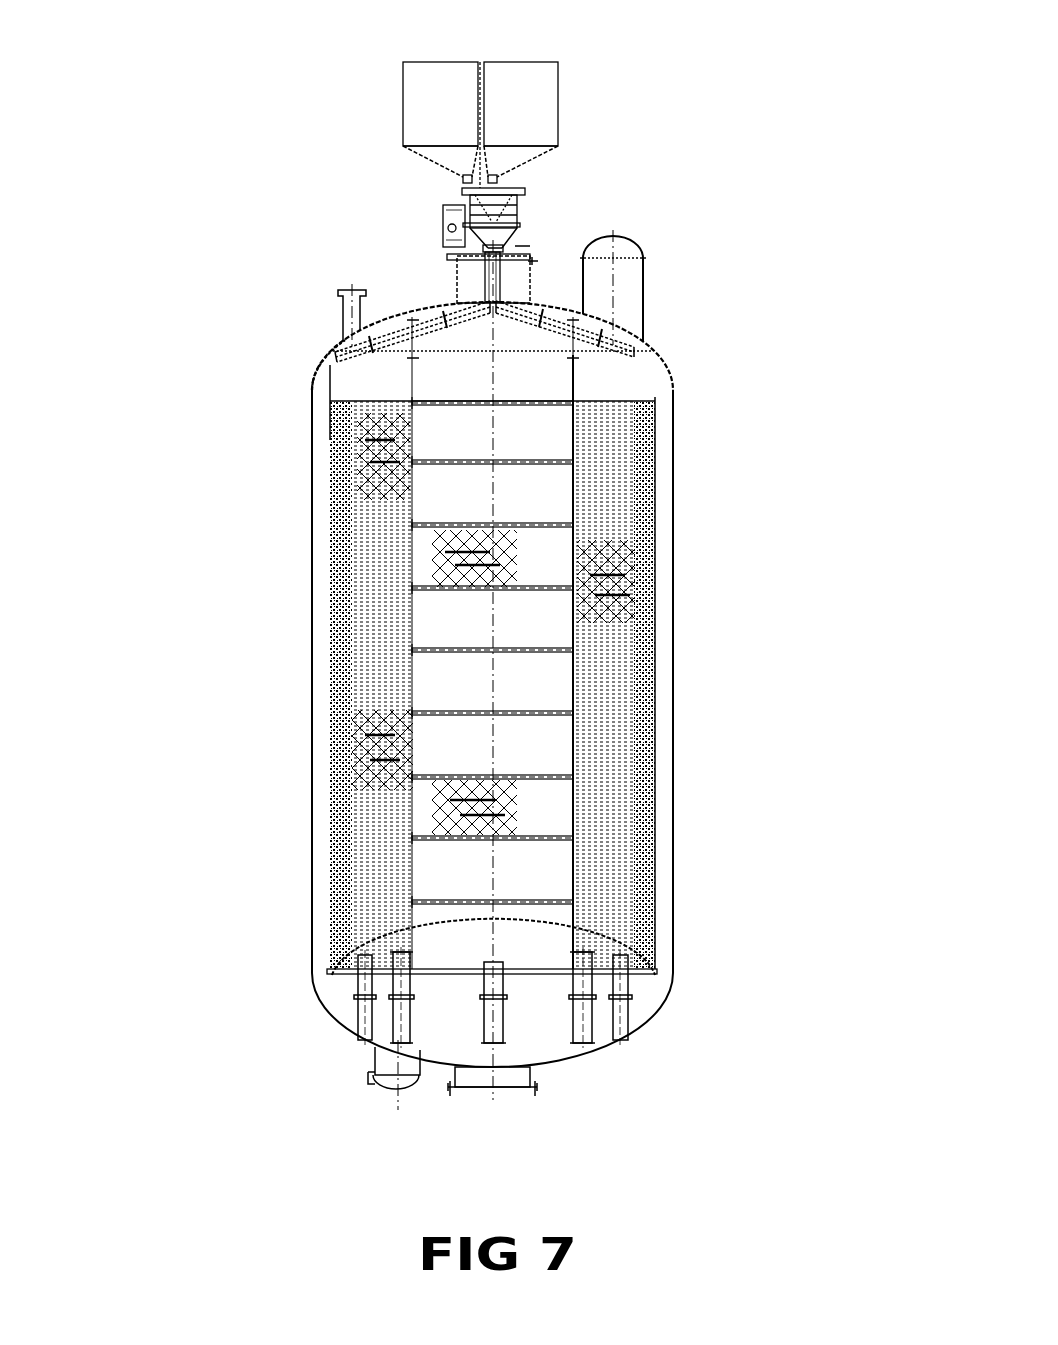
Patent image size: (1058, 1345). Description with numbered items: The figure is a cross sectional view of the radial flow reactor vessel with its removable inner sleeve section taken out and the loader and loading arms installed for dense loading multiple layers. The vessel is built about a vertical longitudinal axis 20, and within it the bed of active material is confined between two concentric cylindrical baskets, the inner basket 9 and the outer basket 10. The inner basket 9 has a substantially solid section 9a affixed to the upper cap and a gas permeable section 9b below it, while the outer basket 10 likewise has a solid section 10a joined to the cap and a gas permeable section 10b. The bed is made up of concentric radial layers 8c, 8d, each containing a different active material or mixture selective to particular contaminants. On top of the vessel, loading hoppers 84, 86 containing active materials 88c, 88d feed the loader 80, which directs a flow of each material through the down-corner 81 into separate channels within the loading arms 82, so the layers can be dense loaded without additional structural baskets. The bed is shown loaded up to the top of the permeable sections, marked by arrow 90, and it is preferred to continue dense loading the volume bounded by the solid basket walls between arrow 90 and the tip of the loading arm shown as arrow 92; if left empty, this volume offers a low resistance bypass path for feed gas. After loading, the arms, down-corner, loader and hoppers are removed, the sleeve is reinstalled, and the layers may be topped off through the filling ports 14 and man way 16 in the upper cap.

The outer basket 10 is at (330, 585).
The solid section of outer basket 10a is at (337, 397).
The gas permeable section of outer basket 10b is at (330, 453).
The top of the permeable part of bed 90 is at (327, 383).
The tip of loading arm 92 is at (333, 360).
The layer of active material 8d is at (337, 805).
The layer of active material 8c is at (373, 837).
The inner basket 9 is at (417, 440).
The solid section of inner basket 9a is at (572, 315).
The gas permeable section of inner basket 9b is at (573, 500).
The loading arms 82 is at (432, 338).
The man way 16 is at (645, 272).
The ports 14 is at (340, 315).
The down-corner 81 is at (487, 277).
The loader 80 is at (522, 202).
The active material 88d is at (417, 82).
The active material 88c is at (527, 92).
The loading hopper 86 is at (407, 128).
The loading hopper 84 is at (563, 127).
The vertical longitudinal axis 20 is at (488, 1100).